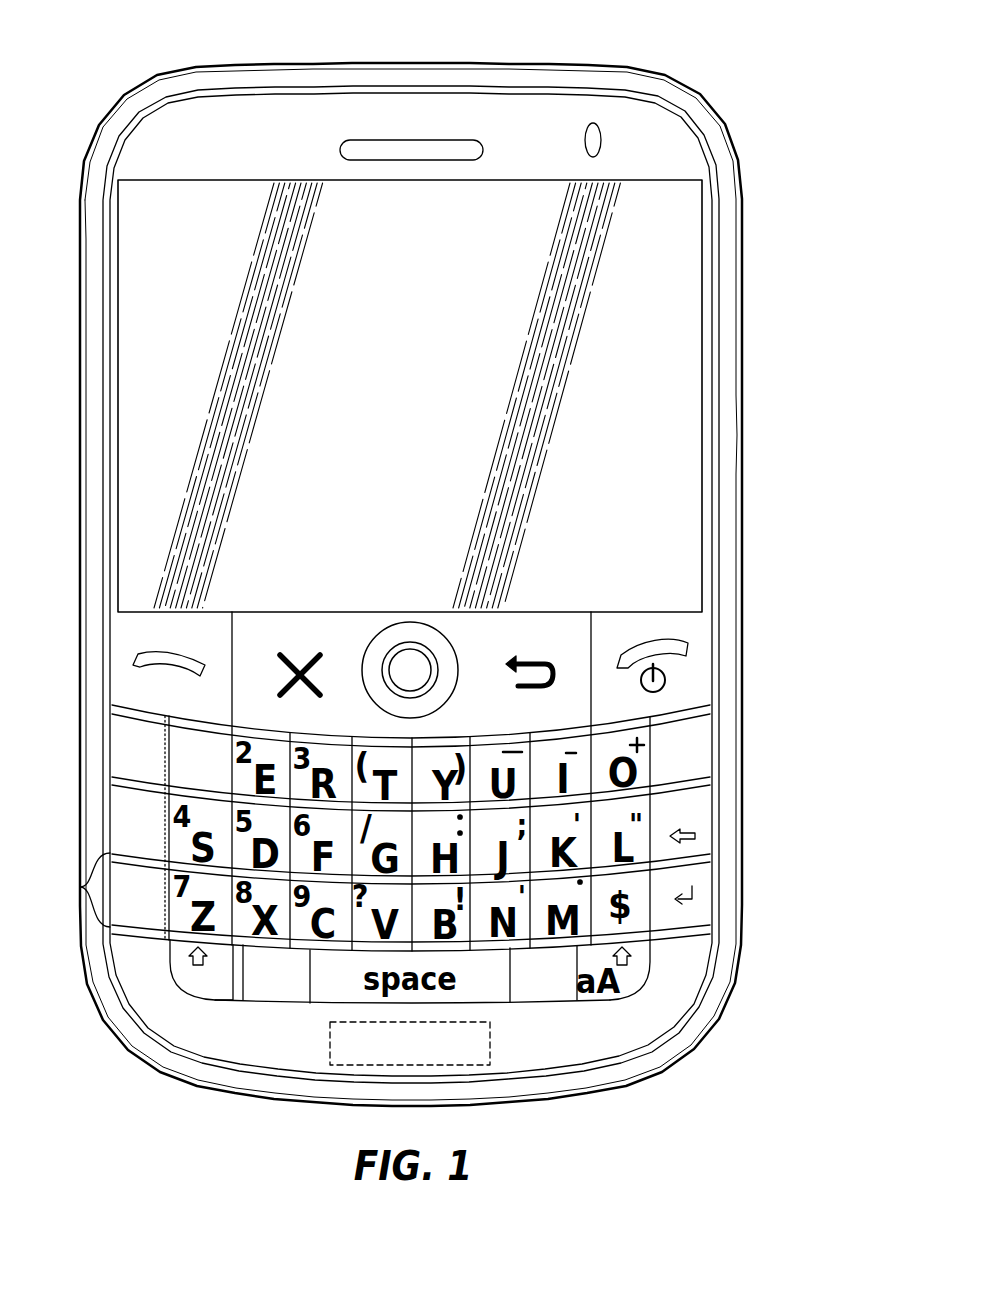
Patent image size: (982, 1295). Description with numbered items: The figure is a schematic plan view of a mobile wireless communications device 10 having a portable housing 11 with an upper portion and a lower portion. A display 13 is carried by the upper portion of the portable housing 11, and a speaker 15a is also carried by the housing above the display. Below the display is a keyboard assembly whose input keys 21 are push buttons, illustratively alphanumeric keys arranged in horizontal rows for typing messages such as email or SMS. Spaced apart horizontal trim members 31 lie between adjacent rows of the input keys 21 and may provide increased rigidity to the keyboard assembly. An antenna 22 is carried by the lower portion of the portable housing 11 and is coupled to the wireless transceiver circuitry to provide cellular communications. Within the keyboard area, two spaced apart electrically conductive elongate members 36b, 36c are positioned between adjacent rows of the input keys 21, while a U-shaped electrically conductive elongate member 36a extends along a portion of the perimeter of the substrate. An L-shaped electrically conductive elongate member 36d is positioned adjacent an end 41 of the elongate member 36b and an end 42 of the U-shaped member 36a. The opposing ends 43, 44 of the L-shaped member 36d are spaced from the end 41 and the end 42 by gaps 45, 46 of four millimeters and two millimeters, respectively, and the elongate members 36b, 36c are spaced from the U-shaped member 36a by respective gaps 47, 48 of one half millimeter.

The mobile wireless communications device 10 is at (95, 73).
The portable housing 11 is at (740, 178).
The display 13 is at (645, 383).
The speaker 15a is at (393, 147).
The input keys 21 is at (693, 637).
The antenna 22 is at (327, 1052).
The horizontal trim members 31 is at (117, 707).
The U-shaped electrically conductive elongate member 36a is at (710, 925).
The electrically conductive elongate member 36b is at (663, 787).
The electrically conductive elongate member 36c is at (600, 870).
The L-shaped electrically conductive elongate member 36d is at (160, 810).
The end of electrically conductive elongate member 41 is at (183, 793).
The end of U-shaped electrically conductive elongate member 42 is at (262, 945).
The end of L-shaped electrically conductive elongate member 43 is at (157, 795).
The end of L-shaped electrically conductive elongate member 44 is at (235, 941).
The gap 45 is at (162, 792).
The gap 46 is at (232, 997).
The gap 47 is at (700, 780).
The gap 48 is at (700, 860).